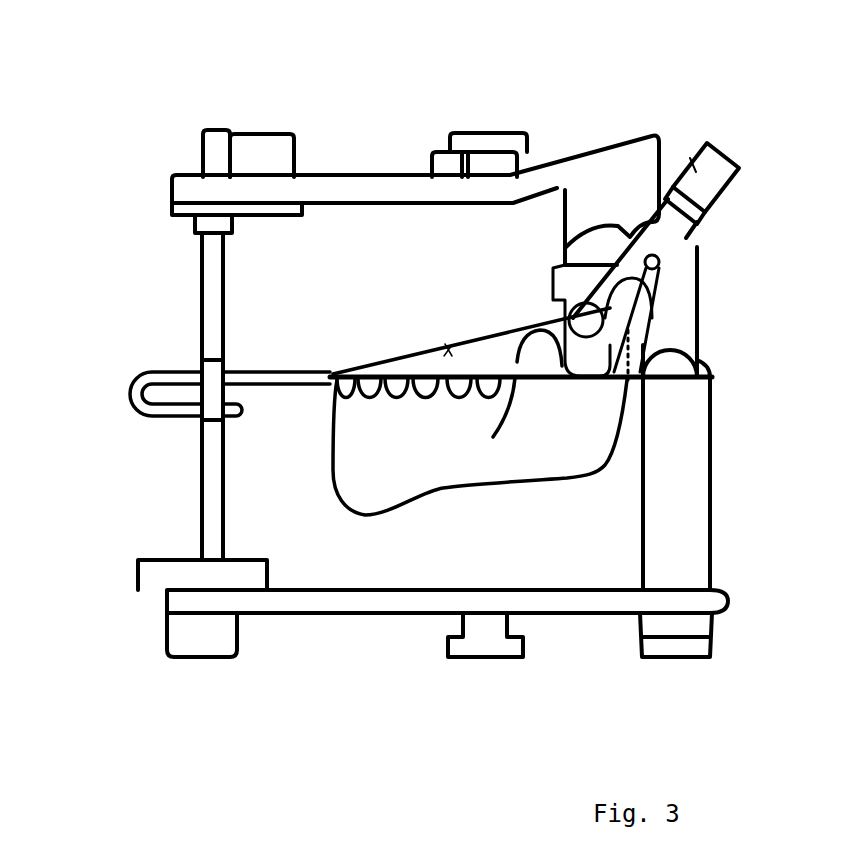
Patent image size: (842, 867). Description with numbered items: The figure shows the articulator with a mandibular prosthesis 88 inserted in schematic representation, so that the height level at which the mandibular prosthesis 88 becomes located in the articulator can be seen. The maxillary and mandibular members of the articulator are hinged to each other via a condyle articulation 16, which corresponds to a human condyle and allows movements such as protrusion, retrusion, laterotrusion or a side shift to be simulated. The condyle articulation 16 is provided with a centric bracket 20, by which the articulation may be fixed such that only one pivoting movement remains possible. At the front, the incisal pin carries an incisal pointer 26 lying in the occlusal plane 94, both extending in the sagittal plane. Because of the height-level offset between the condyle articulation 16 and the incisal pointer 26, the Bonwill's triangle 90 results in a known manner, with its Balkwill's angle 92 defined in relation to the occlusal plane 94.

The condyle articulation 16 is at (660, 303).
The centric bracket 20 is at (678, 158).
The incisal pointer 26 is at (137, 373).
The mandibular prosthesis 88 is at (363, 477).
The Bonwill's triangle 90 is at (497, 350).
The Balkwill's angle 92 is at (427, 395).
The occlusal plane 94 is at (550, 388).